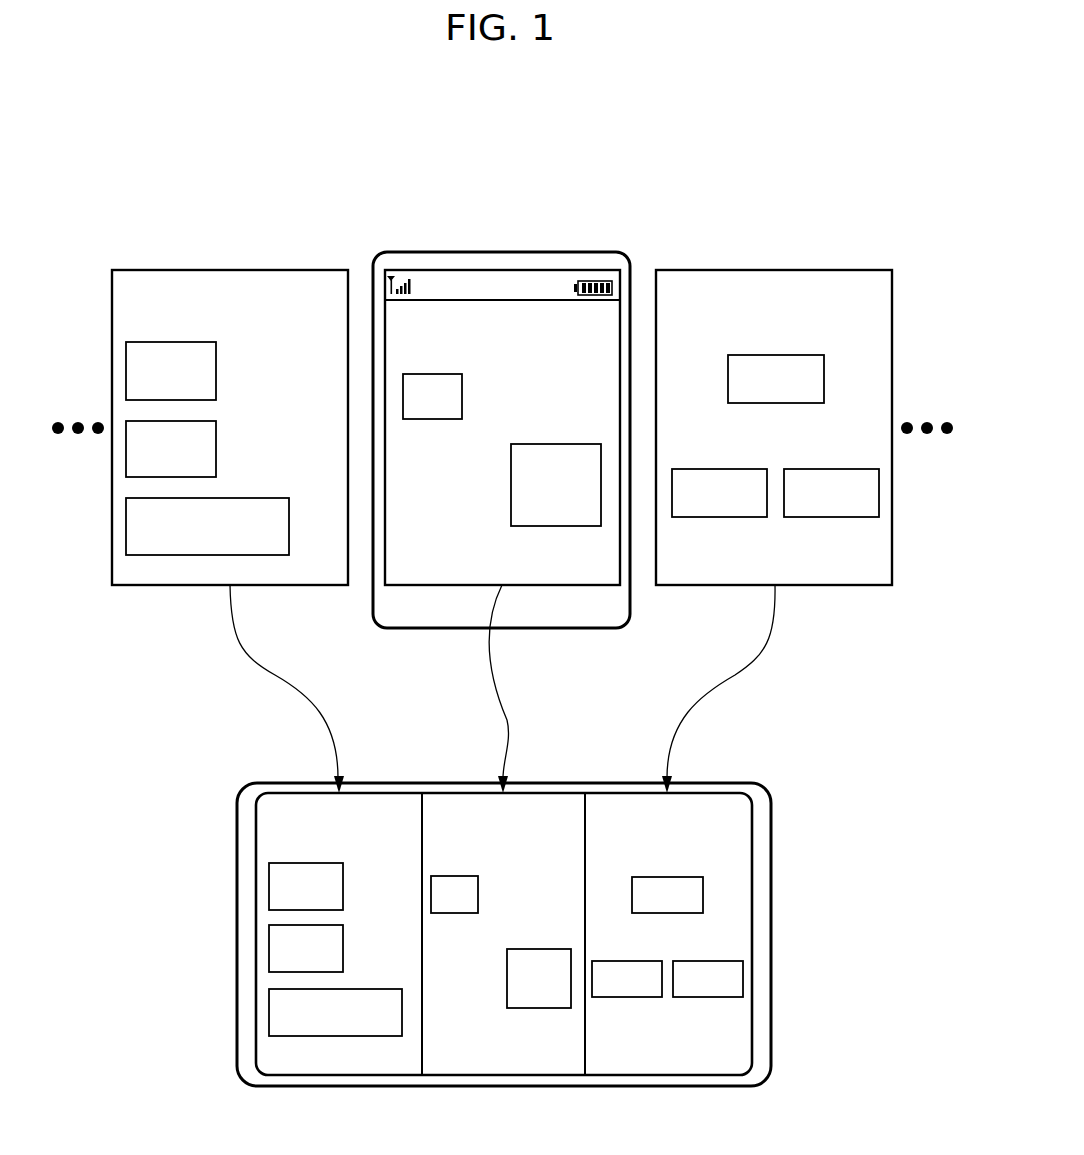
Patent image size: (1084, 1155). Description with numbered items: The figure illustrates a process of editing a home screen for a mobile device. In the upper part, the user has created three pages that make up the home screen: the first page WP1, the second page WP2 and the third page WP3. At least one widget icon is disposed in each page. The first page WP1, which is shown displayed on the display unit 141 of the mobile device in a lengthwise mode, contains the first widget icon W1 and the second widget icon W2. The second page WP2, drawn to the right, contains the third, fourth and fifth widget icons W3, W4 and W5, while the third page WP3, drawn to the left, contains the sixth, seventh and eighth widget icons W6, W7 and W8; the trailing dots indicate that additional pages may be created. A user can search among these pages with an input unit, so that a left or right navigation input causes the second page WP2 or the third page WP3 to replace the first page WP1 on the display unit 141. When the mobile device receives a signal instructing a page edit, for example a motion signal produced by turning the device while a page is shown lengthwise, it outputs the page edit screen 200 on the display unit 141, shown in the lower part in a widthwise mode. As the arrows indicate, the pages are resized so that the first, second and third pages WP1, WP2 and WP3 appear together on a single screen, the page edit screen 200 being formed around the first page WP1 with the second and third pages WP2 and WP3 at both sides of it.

The display unit 141 is at (560, 252).
The page edit screen 200 is at (755, 1018).
The first page WP1 is at (584, 339).
The second page WP2 is at (833, 339).
The third page WP3 is at (278, 339).
The first widget icon W1 is at (440, 643).
The second widget icon W2 is at (554, 726).
The third widget icon W3 is at (728, 634).
The fourth widget icon W4 is at (679, 733).
The fifth widget icon W5 is at (776, 733).
The sixth widget icon W6 is at (234, 626).
The seventh widget icon W7 is at (234, 696).
The eighth widget icon W8 is at (264, 767).